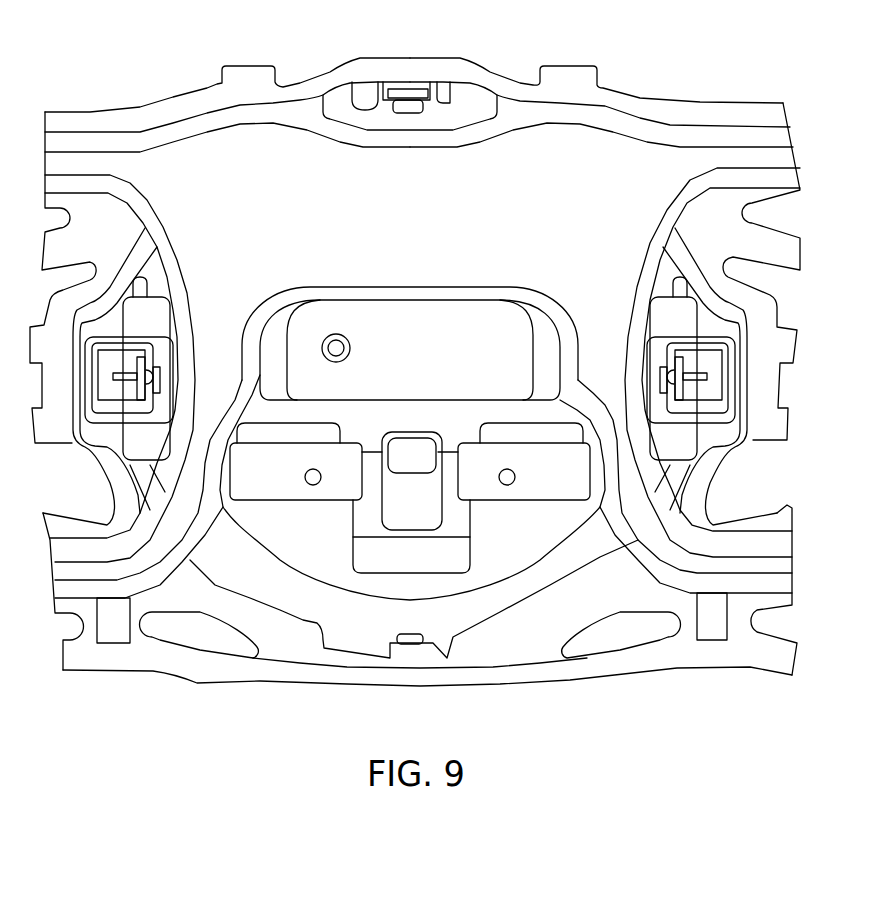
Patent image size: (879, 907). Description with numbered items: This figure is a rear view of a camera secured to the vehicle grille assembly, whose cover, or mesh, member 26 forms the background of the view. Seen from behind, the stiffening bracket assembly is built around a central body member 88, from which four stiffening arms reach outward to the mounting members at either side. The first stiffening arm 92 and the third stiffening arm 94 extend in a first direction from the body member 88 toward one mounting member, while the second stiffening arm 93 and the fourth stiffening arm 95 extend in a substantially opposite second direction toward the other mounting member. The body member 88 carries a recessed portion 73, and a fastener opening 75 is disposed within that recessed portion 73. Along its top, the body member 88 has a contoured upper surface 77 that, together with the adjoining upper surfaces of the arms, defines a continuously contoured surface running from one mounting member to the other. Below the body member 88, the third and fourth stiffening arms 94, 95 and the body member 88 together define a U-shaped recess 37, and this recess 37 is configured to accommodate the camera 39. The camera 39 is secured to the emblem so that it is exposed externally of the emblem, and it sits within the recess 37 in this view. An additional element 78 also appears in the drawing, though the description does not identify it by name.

The cover member 26 is at (707, 667).
The U-shaped recess 37 is at (225, 460).
The camera 39 is at (352, 553).
The recessed portion 73 is at (451, 338).
The fastener opening 75 is at (343, 335).
The upper surface 77 is at (443, 127).
The lower rib 78 is at (467, 610).
The body member 88 is at (617, 165).
The first stiffening arm 92 is at (760, 150).
The second stiffening arm 93 is at (78, 162).
The third stiffening arm 94 is at (756, 583).
The fourth stiffening arm 95 is at (103, 588).